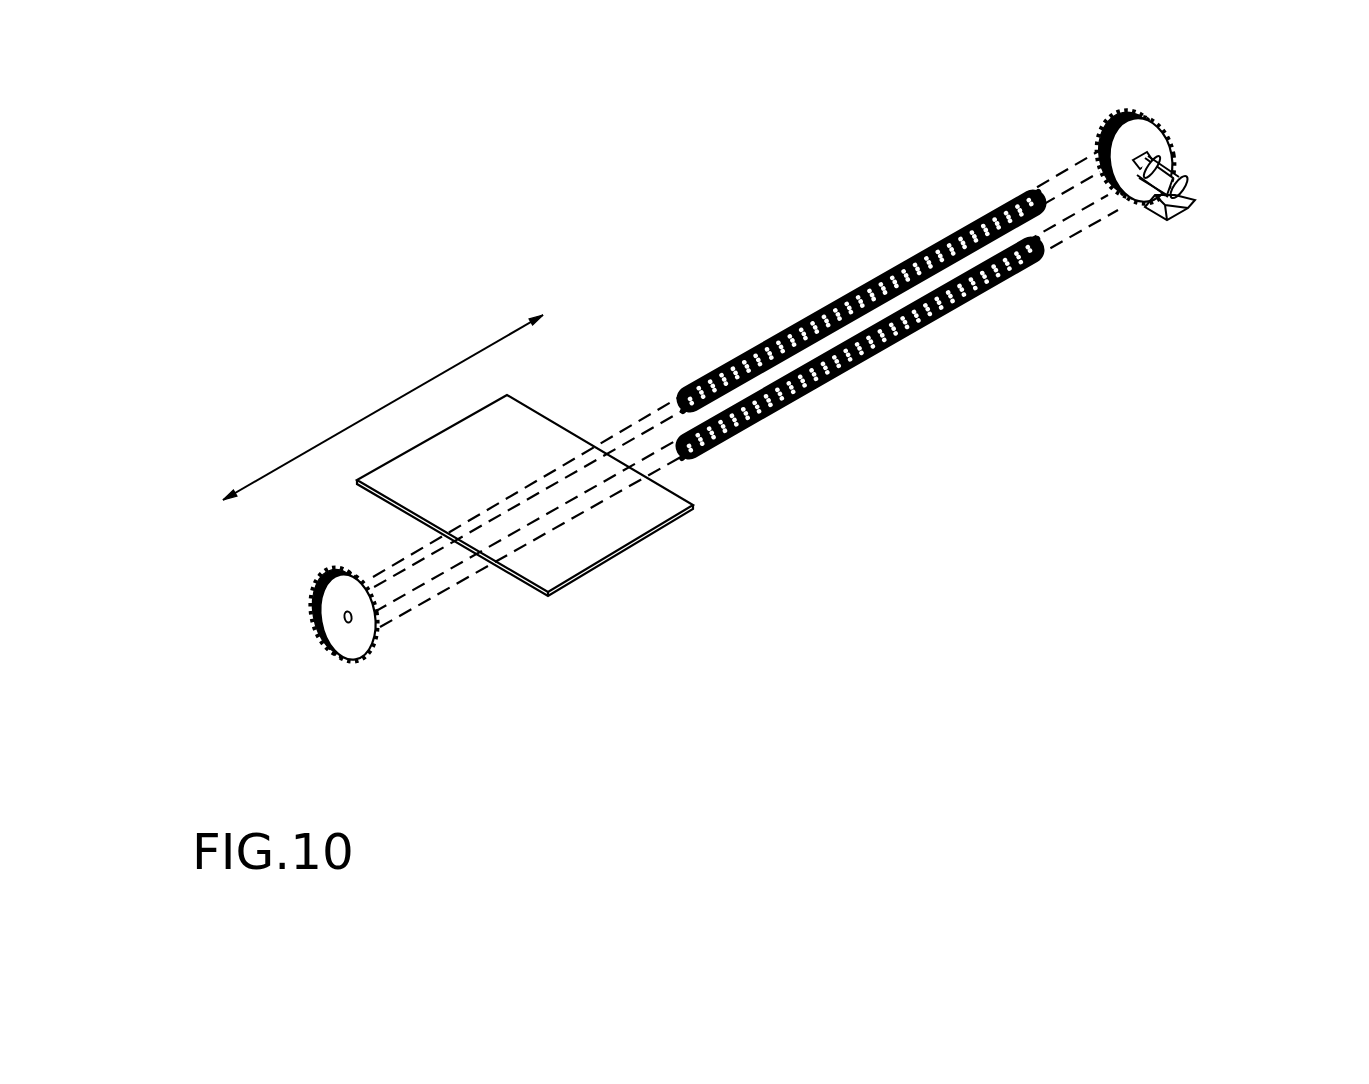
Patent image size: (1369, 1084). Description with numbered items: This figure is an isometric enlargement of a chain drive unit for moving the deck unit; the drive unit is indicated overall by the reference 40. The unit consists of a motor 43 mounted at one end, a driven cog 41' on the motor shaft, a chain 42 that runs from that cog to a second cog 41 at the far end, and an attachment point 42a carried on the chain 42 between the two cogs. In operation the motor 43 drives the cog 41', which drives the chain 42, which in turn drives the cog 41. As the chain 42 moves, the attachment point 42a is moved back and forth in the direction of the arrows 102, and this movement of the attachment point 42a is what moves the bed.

The conveyor drive assembly 40 is at (1072, 106).
The cog 41 is at (291, 600).
The cog 41' is at (1047, 157).
The chain 42 is at (675, 397).
The attachment point 42a is at (610, 522).
The motor 43 is at (1193, 175).
The arrows 102 is at (407, 390).